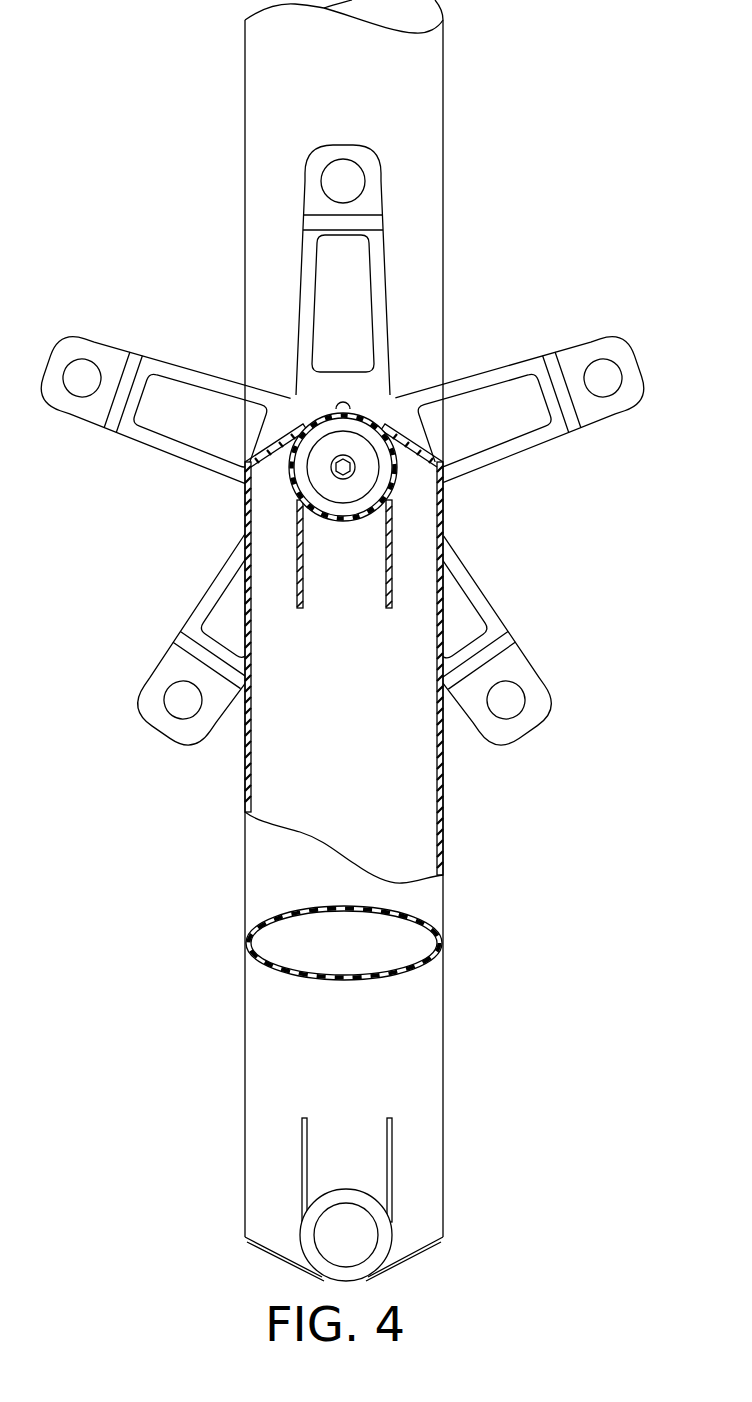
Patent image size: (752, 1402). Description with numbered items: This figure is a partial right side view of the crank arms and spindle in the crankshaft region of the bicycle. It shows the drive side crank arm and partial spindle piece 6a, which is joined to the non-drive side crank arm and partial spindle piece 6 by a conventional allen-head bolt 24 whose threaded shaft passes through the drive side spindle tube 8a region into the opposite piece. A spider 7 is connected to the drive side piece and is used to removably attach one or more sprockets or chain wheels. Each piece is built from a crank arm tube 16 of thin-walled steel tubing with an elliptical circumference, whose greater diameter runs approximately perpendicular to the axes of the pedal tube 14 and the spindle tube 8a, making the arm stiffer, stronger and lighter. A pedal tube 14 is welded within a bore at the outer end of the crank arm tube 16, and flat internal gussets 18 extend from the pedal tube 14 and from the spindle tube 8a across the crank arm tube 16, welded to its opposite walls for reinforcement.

The non-drive side crank arm and partial spindle piece 6 is at (443, 180).
The drive side crank arm and partial spindle piece 6a is at (245, 864).
The spider 7 is at (578, 346).
The drive side spindle tube 8a is at (378, 422).
The pedal tube 14 is at (390, 1240).
The crank arm tube 16 is at (448, 808).
The internal gussets 18 is at (303, 548).
The allen-head bolt 24 is at (356, 468).